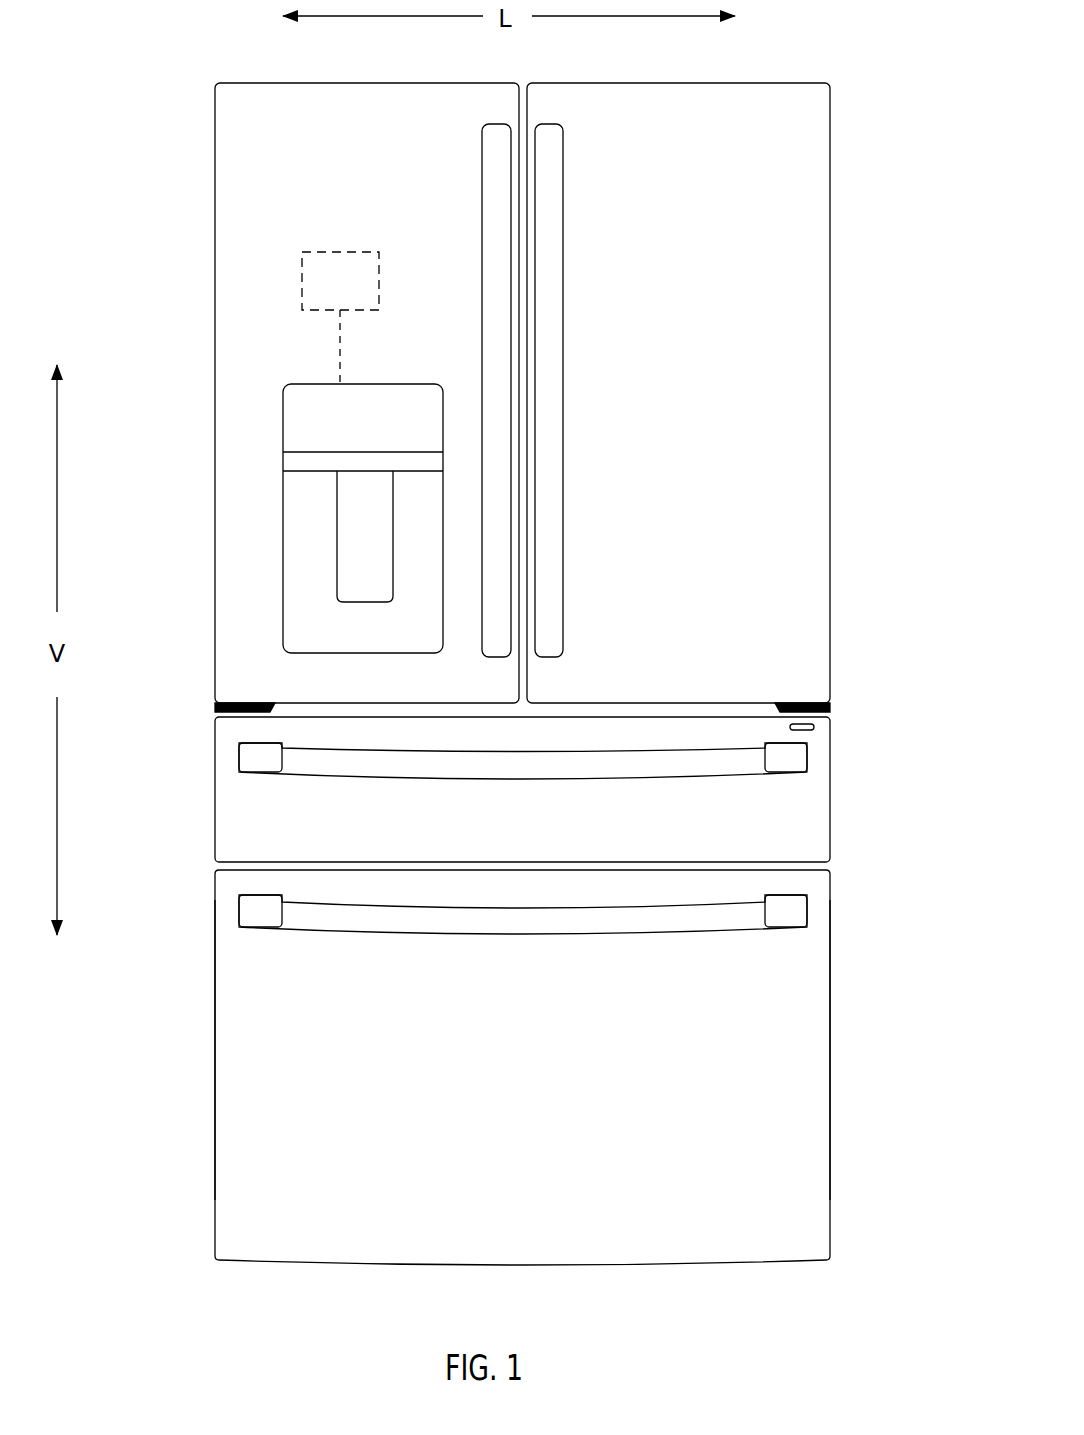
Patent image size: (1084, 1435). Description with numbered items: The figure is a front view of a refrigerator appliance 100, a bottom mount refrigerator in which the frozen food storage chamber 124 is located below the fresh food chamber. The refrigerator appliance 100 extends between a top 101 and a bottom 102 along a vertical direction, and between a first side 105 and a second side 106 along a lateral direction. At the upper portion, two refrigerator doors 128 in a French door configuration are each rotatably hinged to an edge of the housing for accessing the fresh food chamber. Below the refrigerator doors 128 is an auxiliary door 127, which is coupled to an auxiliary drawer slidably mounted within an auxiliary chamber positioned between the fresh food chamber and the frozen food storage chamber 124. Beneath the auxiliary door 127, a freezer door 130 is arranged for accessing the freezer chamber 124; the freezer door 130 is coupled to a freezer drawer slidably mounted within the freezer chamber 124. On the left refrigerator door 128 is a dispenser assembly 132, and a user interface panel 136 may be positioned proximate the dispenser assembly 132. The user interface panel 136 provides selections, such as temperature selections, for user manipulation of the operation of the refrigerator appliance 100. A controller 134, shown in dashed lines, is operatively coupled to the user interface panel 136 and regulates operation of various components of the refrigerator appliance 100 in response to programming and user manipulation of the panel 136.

The refrigerator appliance 100 is at (858, 196).
The top 101 is at (201, 80).
The bottom 102 is at (237, 1266).
The first side 105 is at (205, 1010).
The second side 106 is at (837, 1135).
The frozen food storage chamber 124 is at (723, 1198).
The auxiliary door 127 is at (783, 815).
The refrigerator doors 128 is at (237, 143).
The freezer door 130 is at (777, 990).
The dispenser assembly 132 is at (316, 551).
The controller 134 is at (302, 273).
The user interface panel 136 is at (296, 413).